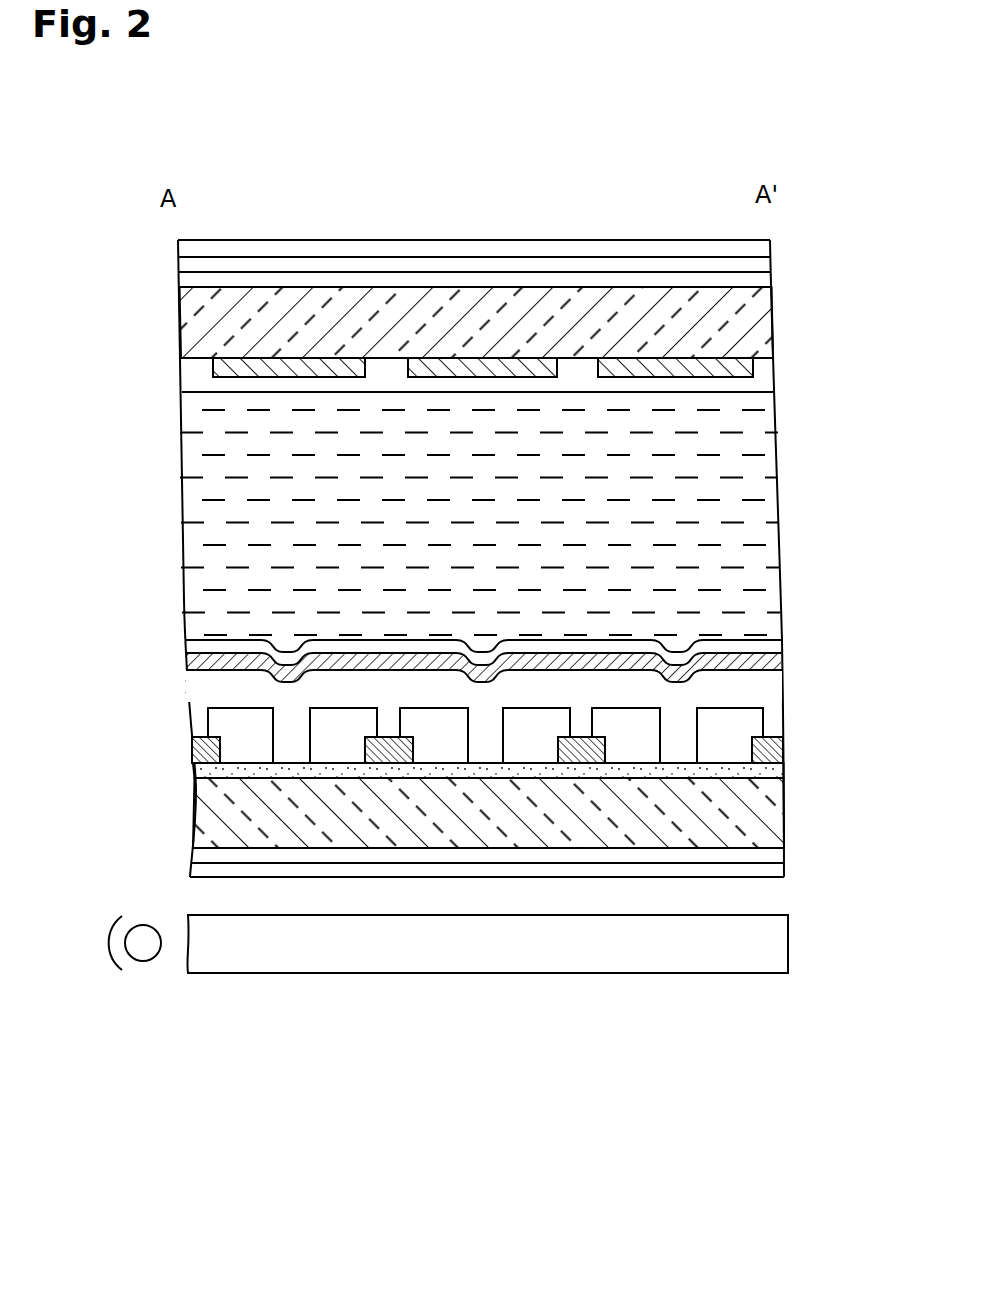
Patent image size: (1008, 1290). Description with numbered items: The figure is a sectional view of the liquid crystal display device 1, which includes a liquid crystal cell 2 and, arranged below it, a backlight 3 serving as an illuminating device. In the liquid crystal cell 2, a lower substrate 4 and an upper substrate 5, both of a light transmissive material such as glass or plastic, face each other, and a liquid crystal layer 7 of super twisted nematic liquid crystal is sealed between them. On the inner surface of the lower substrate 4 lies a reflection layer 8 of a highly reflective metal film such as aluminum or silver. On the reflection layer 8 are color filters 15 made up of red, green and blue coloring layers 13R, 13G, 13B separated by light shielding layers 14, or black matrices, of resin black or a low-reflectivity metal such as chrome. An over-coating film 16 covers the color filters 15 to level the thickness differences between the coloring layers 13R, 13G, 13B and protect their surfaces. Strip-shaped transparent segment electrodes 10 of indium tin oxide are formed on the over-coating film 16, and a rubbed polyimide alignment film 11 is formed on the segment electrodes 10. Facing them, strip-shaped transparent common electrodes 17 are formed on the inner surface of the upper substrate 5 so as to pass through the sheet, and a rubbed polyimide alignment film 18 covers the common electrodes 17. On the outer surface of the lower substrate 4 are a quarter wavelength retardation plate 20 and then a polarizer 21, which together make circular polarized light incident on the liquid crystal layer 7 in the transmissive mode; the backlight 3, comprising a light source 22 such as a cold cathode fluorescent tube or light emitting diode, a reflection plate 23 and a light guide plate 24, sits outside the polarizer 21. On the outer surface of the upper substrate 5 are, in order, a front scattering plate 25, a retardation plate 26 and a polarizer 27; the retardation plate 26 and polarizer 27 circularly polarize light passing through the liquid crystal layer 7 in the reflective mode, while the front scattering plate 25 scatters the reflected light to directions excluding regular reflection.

The liquid crystal display device 1 is at (458, 183).
The liquid crystal cell 2 is at (172, 510).
The backlight 3 is at (162, 897).
The lower substrate 4 is at (760, 810).
The upper substrate 5 is at (757, 328).
The liquid crystal layer 7 is at (745, 545).
The reflection layer 8 is at (768, 772).
The segment electrodes 10 is at (762, 667).
The alignment film 11 is at (762, 645).
The red coloring layer 13R is at (258, 750).
The green coloring layer 13G is at (450, 753).
The blue coloring layer 13B is at (643, 750).
The light shielding layers 14 is at (392, 753).
The color filters 15 is at (685, 1017).
The over-coating film 16 is at (768, 692).
The common electrodes 17 is at (758, 365).
The alignment film 18 is at (748, 383).
The retardation plate 20 is at (770, 857).
The polarizer 21 is at (778, 872).
The light source 22 is at (148, 945).
The reflection plate 23 is at (108, 952).
The light guide plate 24 is at (773, 942).
The front scattering plate 25 is at (762, 280).
The retardation plate 26 is at (762, 263).
The polarizer 27 is at (763, 248).